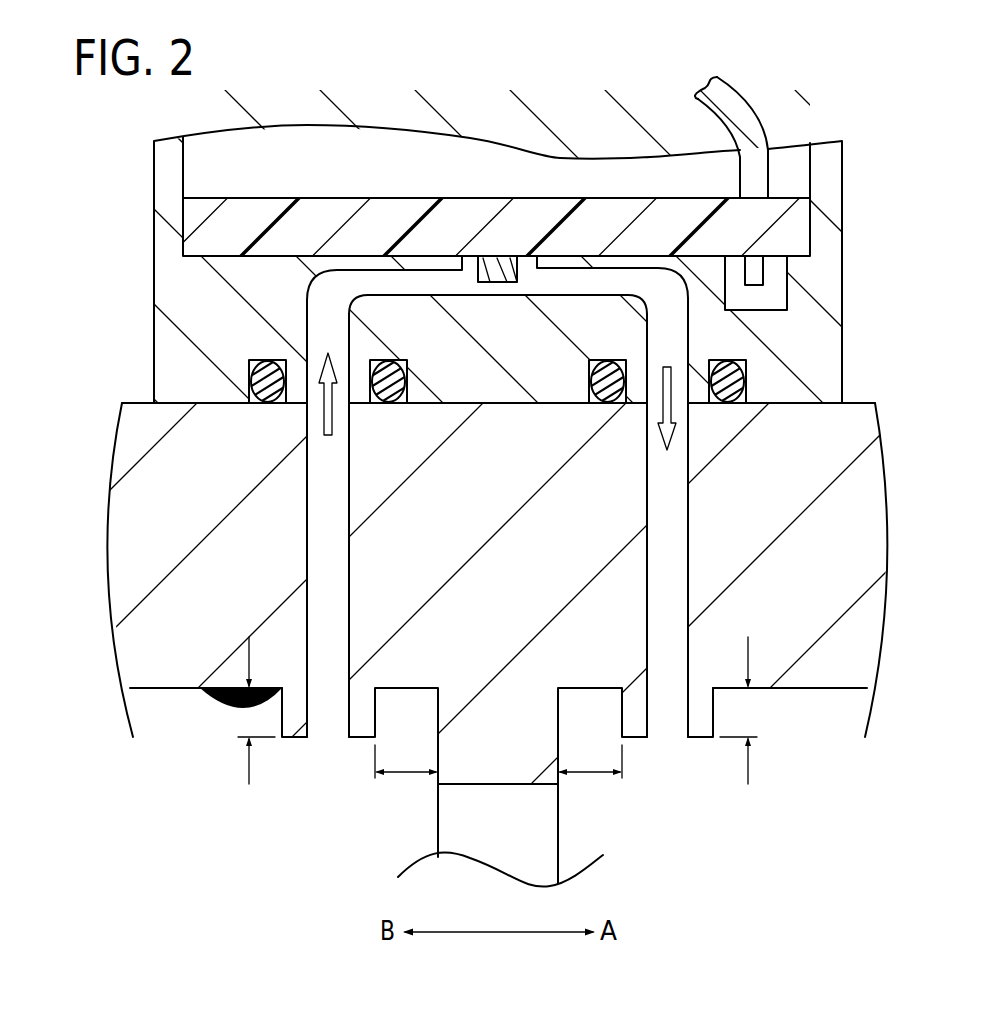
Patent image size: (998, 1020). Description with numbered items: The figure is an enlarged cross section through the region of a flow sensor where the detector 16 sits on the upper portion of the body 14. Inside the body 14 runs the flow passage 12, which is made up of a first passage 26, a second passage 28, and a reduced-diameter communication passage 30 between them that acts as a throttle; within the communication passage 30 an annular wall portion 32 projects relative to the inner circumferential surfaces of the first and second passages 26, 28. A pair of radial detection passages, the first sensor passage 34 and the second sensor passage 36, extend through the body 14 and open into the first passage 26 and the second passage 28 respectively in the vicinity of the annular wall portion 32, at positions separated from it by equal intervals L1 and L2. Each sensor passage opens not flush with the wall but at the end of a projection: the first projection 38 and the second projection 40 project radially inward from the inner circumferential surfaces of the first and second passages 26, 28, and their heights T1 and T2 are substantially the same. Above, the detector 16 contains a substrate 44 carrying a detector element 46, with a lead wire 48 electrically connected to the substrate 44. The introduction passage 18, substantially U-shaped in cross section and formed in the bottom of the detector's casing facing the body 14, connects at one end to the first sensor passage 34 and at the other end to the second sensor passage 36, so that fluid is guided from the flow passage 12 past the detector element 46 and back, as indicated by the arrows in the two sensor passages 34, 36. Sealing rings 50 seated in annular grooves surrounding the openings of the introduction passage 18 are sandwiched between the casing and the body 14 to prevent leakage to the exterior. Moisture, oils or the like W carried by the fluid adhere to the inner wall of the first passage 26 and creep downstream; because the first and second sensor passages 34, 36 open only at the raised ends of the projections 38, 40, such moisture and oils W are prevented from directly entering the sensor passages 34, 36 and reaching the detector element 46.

The flow passage 12 is at (170, 760).
The body 14 is at (899, 517).
The detector 16 is at (860, 215).
The introduction passage 18 is at (617, 283).
The first passage 26 is at (153, 716).
The second passage 28 is at (840, 714).
The communication passage 30 is at (548, 838).
The annular wall portion 32 is at (477, 776).
The first sensor passage 34 is at (327, 527).
The second sensor passage 36 is at (671, 527).
The first projection 38 is at (297, 725).
The second projection 40 is at (701, 725).
The substrate 44 is at (266, 207).
The detector element 46 is at (500, 282).
The lead wire 48 is at (727, 108).
The sealing rings 50 is at (250, 384).
The moisture, oils or the like W is at (237, 709).
The height of first projection T1 is at (243, 710).
The height of second projection T2 is at (751, 710).
The distance of first sensor passage from annular wall portion L1 is at (406, 760).
The distance of second sensor passage from annular wall portion L2 is at (590, 760).